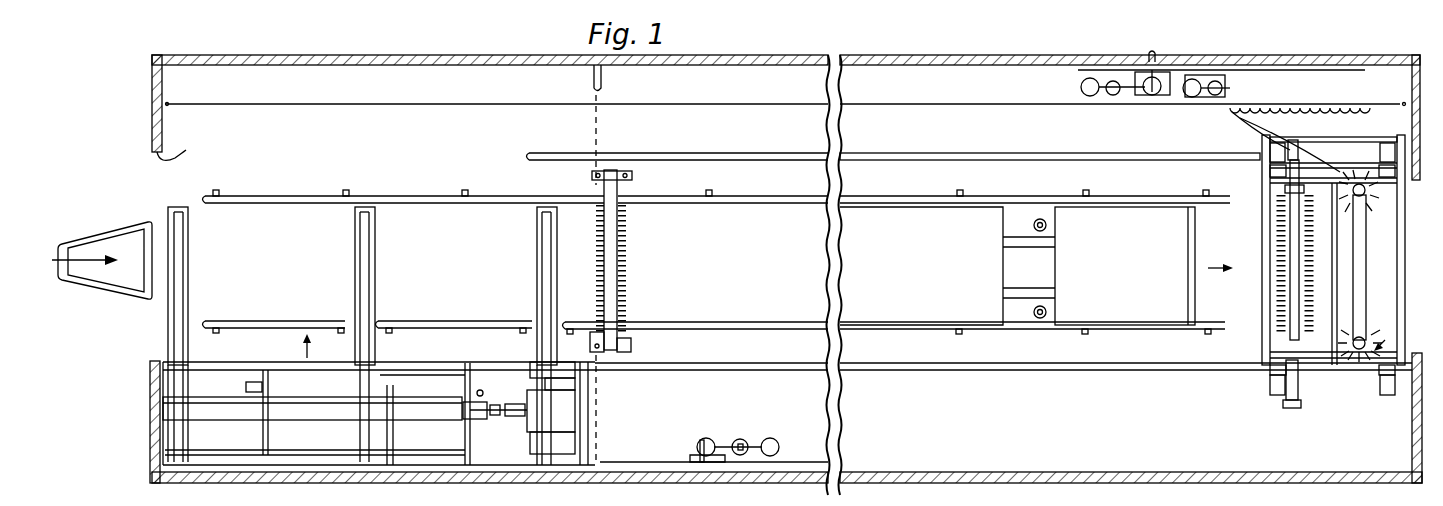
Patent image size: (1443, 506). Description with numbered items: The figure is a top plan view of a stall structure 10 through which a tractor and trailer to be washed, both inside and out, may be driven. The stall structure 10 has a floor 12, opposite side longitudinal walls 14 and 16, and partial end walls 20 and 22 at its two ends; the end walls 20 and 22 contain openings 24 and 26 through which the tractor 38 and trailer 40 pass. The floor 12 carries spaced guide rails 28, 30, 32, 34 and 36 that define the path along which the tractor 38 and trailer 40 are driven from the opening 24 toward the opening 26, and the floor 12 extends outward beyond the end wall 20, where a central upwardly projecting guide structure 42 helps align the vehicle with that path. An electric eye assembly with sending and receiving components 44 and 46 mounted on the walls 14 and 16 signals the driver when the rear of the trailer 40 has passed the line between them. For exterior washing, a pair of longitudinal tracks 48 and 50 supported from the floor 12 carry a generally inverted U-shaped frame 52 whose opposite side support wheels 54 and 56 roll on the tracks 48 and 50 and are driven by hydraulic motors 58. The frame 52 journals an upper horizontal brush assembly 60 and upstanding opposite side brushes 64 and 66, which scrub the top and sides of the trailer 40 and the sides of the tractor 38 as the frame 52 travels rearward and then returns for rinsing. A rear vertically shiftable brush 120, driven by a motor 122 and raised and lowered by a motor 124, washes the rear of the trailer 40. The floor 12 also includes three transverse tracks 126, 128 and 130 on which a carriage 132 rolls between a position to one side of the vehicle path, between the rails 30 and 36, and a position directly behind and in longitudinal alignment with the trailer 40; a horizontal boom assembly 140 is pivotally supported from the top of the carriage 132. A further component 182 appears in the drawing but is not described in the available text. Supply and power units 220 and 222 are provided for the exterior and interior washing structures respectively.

The stall structure 10 is at (988, 55).
The floor 12 is at (284, 257).
The side longitudinal wall 14 is at (886, 60).
The side longitudinal wall 16 is at (1042, 472).
The partial end wall 20 is at (155, 122).
The partial end wall 22 is at (1410, 441).
The opening 24 is at (187, 148).
The opening 26 is at (1418, 356).
The guide rail 28 is at (418, 197).
The guide rail 30 is at (870, 200).
The guide rail 32 is at (287, 321).
The guide rail 34 is at (426, 322).
The guide rail 36 is at (790, 332).
The tractor 38 is at (1140, 267).
The trailer 40 is at (930, 276).
The guide structure 42 is at (103, 290).
The sending component 44 is at (603, 77).
The receiving component 46 is at (601, 464).
The longitudinal track 48 is at (1058, 160).
The longitudinal track 50 is at (1006, 372).
The inverted U-shaped frame 52 is at (1262, 414).
The side support wheel 54 is at (1272, 172).
The side support wheel 56 is at (1268, 377).
The hydraulic motor 58 is at (1270, 150).
The upper horizontal brush assembly 60 is at (1262, 263).
The side brush 64 is at (1388, 208).
The side brush 66 is at (1380, 315).
The rear vertically shiftable brush 120 is at (626, 262).
The motor 122 is at (603, 338).
The motor 124 is at (630, 346).
The transverse track 126 is at (180, 306).
The transverse track 128 is at (366, 271).
The transverse track 130 is at (540, 268).
The carriage 132 is at (160, 354).
The horizontal boom assembly 140 is at (316, 428).
The drive motor 182 is at (522, 440).
The supply and power unit 220 is at (1058, 92).
The supply and power unit 222 is at (712, 418).